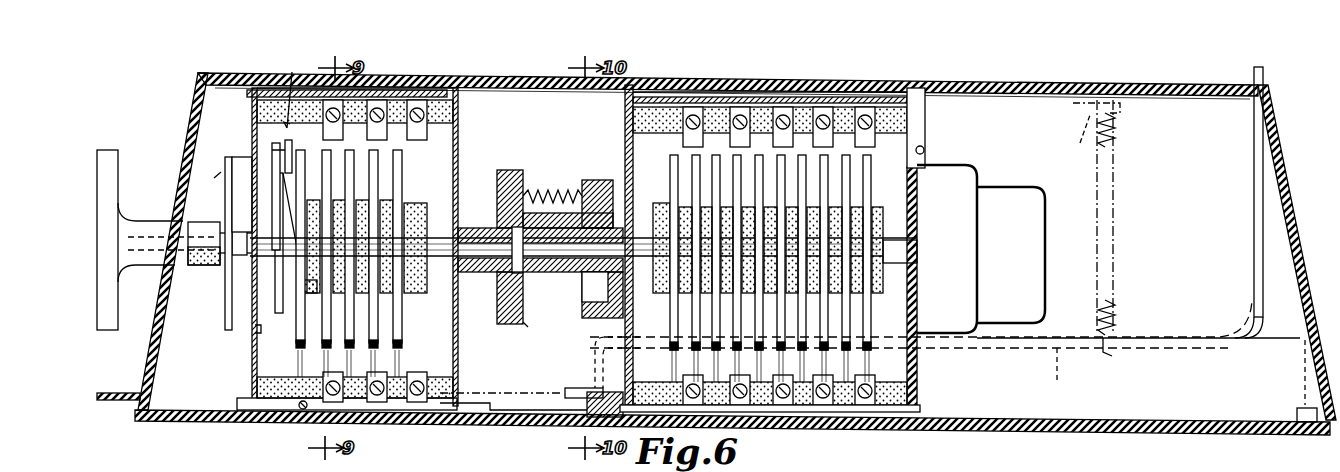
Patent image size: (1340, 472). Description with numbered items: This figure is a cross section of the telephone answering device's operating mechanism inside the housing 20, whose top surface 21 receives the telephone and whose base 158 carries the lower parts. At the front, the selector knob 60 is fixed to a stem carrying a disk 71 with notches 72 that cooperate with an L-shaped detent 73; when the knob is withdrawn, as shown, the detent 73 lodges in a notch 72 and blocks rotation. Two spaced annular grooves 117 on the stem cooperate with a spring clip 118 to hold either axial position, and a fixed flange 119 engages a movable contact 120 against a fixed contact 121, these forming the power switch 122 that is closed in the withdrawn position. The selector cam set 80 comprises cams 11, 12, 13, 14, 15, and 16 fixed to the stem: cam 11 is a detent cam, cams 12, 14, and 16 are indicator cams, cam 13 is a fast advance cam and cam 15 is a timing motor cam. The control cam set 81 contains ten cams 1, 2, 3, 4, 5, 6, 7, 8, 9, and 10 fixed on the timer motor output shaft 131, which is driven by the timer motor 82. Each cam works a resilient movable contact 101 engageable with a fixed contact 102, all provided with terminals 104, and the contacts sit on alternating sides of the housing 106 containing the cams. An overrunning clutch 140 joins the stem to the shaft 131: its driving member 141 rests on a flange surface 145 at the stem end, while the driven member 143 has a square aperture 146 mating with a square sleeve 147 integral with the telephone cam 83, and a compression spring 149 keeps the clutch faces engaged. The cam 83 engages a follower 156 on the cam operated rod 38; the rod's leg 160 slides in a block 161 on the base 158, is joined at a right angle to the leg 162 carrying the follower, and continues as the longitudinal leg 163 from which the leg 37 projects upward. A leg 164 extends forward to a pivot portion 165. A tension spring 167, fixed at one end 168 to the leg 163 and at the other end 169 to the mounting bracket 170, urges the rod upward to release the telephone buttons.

The timer motor cam 1 is at (878, 222).
The timer motor cam 2 is at (844, 238).
The timer motor cam 3 is at (823, 238).
The timer motor cam 4 is at (802, 238).
The timer motor cam 5 is at (782, 238).
The timer motor cam 6 is at (760, 238).
The timer motor cam 7 is at (739, 238).
The timer motor cam 8 is at (717, 238).
The timer motor cam 9 is at (696, 238).
The timer motor cam 10 is at (670, 233).
The detent cam 11 is at (418, 222).
The indicator cam 12 is at (394, 240).
The fast advance cam 13 is at (372, 240).
The indicator cam 14 is at (348, 240).
The timing motor cam 15 is at (326, 240).
The indicator cam 16 is at (300, 240).
The housing 20 is at (1291, 161).
The top surface 21 is at (1030, 86).
The leg 37 is at (1264, 72).
The cam operated rod 38 is at (1021, 361).
The selector knob 60 is at (108, 150).
The disk 71 is at (228, 320).
The notches 72 is at (211, 184).
The L-shaped detent 73 is at (258, 152).
The selector cam set 80 is at (289, 366).
The control cam set 81 is at (894, 378).
The timer motor 82 is at (981, 249).
The telephone cam 83 is at (632, 176).
The movable contact 101 is at (430, 375).
The fixed contact 102 is at (455, 126).
The terminals 104 is at (455, 108).
The housing 106 is at (423, 92).
The annular grooves 117 is at (240, 270).
The spring clip 118 is at (273, 334).
The fixed flange 119 is at (281, 258).
The movable contact 120 is at (292, 145).
The fixed contact 121 is at (270, 143).
The switch 122 is at (287, 93).
The timer motor output shaft 131 is at (905, 252).
The overrunning clutch 140 is at (525, 152).
The driving member 141 is at (497, 220).
The driven member 143 is at (539, 330).
The flange surface 145 is at (480, 264).
The square aperture 146 is at (520, 284).
The square sleeve 147 is at (567, 288).
The compression spring 149 is at (542, 188).
The follower 156 is at (592, 346).
The base 158 is at (212, 421).
The leg 160 is at (590, 390).
The block 161 is at (588, 402).
The leg 162 is at (598, 361).
The leg 163 is at (1064, 371).
The leg 164 is at (490, 415).
The pivot portion 165 is at (300, 412).
The tension spring 167 is at (1112, 310).
The spring end 168 is at (1108, 354).
The spring end 169 is at (1114, 122).
The mounting bracket 170 is at (1072, 133).